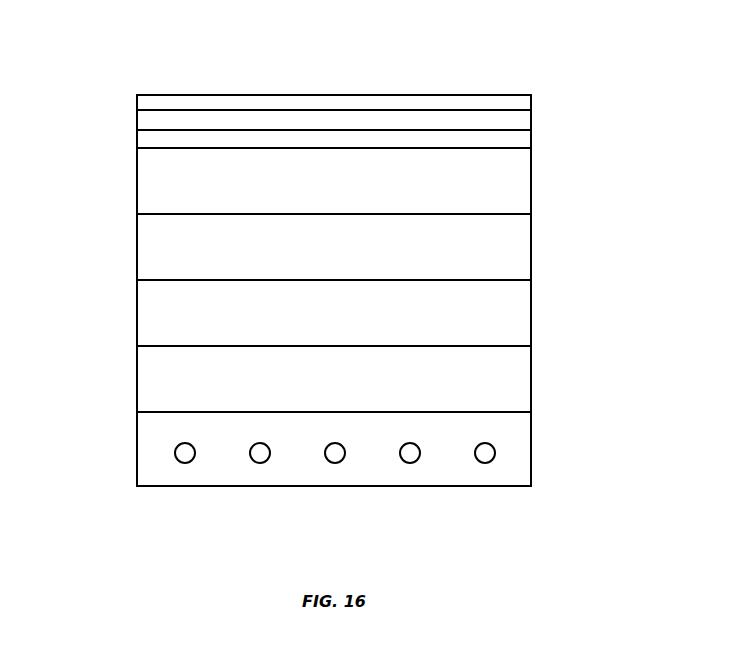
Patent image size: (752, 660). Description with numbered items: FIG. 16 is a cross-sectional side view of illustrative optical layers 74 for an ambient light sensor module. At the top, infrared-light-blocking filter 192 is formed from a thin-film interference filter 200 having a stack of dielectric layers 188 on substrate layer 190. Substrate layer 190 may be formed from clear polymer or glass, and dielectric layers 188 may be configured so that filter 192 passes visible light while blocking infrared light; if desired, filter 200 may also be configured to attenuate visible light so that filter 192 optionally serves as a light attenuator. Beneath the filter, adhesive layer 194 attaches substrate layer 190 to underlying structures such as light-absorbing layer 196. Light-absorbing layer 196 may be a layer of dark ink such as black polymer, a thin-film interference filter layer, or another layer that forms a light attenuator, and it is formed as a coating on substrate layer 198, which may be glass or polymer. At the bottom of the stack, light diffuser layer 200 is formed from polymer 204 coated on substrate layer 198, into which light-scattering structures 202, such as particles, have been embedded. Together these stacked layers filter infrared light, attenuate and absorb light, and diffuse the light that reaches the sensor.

The multilayer structure 74 is at (507, 65).
The dielectric layers 188 is at (315, 123).
The substrate layer 190 is at (147, 183).
The infrared-light-blocking filter 192 is at (547, 95).
The adhesive layer 194 is at (522, 249).
The light-absorbing layer 196 is at (522, 314).
The substrate layer 198 is at (522, 379).
The light diffuser layer 200 is at (122, 97).
The light-scattering structures 202 is at (336, 463).
The polymer 204 is at (148, 452).